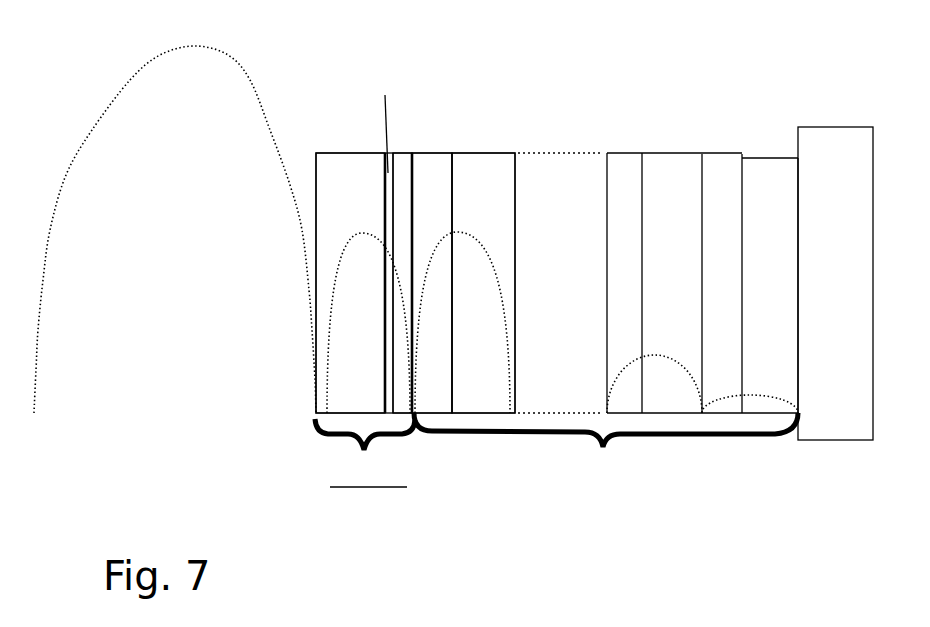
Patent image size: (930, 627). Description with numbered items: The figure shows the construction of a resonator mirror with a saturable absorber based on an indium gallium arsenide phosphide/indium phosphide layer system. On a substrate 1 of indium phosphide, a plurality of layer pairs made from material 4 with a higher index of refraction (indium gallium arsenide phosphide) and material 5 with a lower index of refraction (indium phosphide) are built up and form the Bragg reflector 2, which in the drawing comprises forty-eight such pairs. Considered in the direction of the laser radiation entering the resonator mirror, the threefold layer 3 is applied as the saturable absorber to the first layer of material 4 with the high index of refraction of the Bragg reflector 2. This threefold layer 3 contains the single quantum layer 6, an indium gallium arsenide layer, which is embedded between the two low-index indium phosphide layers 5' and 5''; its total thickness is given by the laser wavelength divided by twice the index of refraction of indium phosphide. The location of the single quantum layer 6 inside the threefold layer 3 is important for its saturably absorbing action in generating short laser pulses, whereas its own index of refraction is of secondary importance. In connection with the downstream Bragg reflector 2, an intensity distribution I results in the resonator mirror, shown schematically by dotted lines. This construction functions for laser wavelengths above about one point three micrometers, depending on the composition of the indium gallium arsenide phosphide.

The substrate 1 is at (815, 413).
The Bragg reflector 2 is at (685, 438).
The threefold layer 3 is at (392, 440).
The material with higher index of refraction 4 is at (435, 160).
The material with lower index of refraction 5 is at (485, 241).
The layer with low index of refraction 5' is at (339, 239).
The layer with low index of refraction 5'' is at (423, 217).
The single quantum layer 6 is at (385, 378).
The intensity distribution I is at (278, 155).